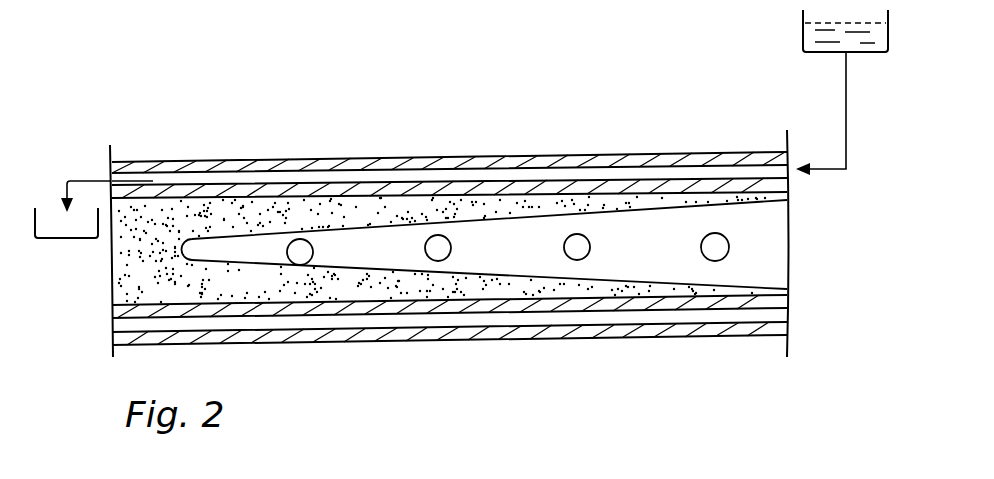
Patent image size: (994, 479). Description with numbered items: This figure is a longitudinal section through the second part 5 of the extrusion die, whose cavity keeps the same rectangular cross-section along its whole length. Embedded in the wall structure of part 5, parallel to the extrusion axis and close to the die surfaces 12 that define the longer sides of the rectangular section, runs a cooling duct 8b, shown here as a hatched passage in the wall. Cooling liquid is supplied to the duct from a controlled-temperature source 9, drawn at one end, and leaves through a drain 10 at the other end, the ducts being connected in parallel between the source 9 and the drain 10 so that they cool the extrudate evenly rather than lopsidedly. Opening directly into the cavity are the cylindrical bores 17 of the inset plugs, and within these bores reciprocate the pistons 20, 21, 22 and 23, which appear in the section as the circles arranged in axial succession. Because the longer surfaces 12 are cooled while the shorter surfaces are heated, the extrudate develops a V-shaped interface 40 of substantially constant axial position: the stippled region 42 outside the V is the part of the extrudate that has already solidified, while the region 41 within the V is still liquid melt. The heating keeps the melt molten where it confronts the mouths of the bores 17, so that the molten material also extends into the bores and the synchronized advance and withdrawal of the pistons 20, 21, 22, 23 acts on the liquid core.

The second part 5 is at (438, 145).
The cooling duct 8b is at (198, 178).
The die surfaces 12 is at (369, 203).
The solidified part of extrudate 42 is at (158, 228).
The V-shaped interface 40 is at (486, 268).
The liquid melt part of extrudate 41 is at (663, 267).
The piston 23 is at (300, 240).
The piston 22 is at (451, 248).
The cylindrical bore 17 is at (577, 234).
The piston 21 is at (590, 248).
The piston 20 is at (725, 237).
The controlled-temperature source 9 is at (803, 32).
The drain 10 is at (70, 240).